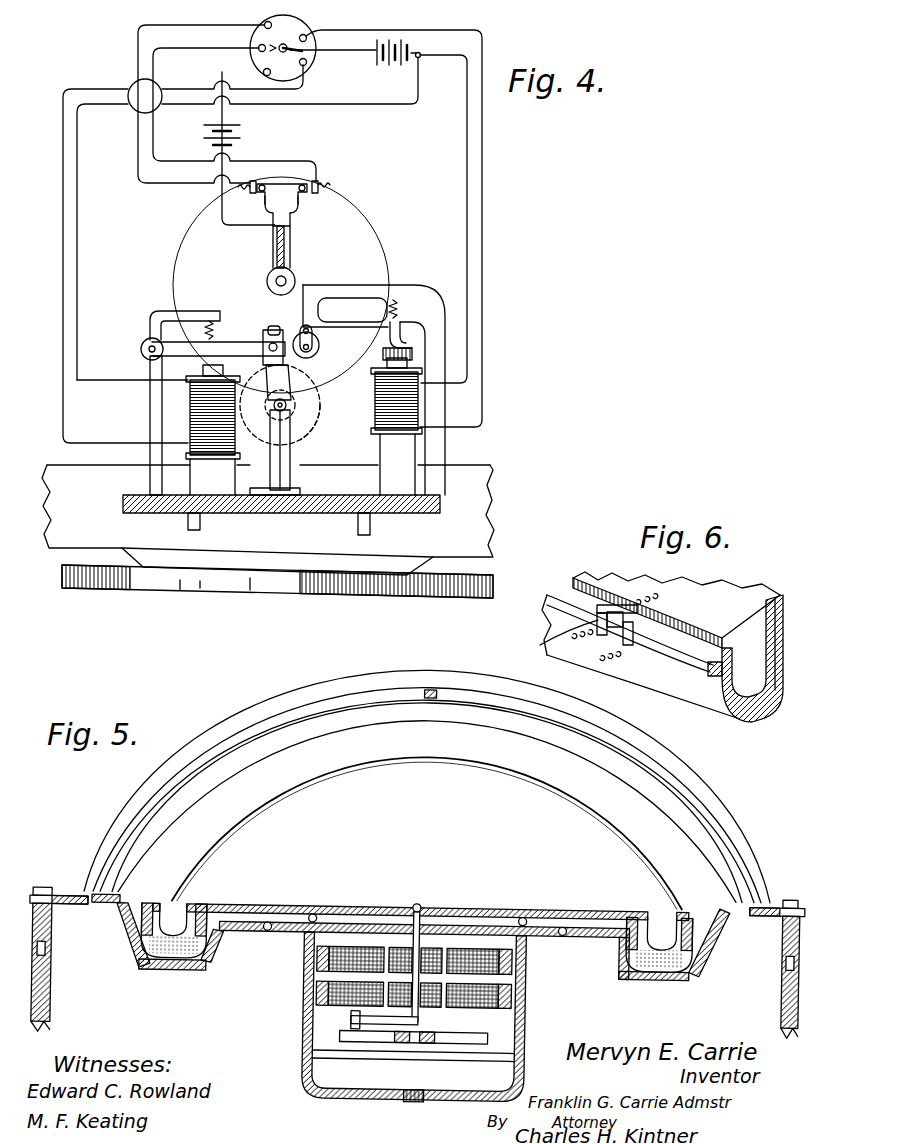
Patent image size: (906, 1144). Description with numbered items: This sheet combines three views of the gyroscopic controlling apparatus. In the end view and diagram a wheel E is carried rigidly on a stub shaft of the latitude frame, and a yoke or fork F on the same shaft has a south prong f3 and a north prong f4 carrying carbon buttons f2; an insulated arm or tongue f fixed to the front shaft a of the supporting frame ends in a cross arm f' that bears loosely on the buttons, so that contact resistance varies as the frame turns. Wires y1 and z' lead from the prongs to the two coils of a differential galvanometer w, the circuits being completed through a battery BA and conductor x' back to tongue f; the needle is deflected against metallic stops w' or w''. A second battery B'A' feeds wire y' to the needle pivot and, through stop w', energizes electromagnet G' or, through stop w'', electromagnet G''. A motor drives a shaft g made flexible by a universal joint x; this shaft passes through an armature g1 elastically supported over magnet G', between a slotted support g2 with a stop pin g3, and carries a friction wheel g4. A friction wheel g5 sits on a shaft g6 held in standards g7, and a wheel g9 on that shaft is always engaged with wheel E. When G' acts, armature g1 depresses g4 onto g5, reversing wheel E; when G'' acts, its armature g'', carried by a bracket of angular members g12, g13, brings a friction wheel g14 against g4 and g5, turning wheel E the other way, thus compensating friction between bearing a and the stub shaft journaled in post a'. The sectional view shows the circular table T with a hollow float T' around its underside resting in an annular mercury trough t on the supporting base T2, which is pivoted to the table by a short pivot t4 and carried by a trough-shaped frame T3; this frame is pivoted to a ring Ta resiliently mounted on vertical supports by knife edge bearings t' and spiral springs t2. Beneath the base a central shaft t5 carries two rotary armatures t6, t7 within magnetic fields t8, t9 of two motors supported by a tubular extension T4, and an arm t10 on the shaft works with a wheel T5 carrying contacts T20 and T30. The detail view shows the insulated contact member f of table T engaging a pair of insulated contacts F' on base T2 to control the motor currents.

In FIG. 4, the differential galvanometer w is at (248, 40).
In FIG. 4, the metallic stop w' is at (196, 235).
In FIG. 4, the metallic stop w'' is at (391, 218).
In FIG. 4, the universal joint x is at (286, 38).
In FIG. 4, the conductor x' is at (236, 148).
In FIG. 4, the wire y' is at (333, 45).
In FIG. 4, the wire y1 is at (234, 115).
In FIG. 4, the wire z' is at (201, 112).
In FIG. 4, the battery BA is at (243, 137).
In FIG. 4, the second battery B'A' is at (272, 211).
In FIG. 4, the wheel E is at (386, 244).
In FIG. 4, the yoke or fork F is at (271, 226).
In FIG. 4, the arm or tongue f is at (293, 247).
In FIG. 6, the arm or tongue f is at (617, 627).
In FIG. 4, the cross arm f' is at (282, 181).
In FIG. 4, the carbon buttons f2 is at (322, 160).
In FIG. 4, the south arm of fork f3 is at (263, 199).
In FIG. 4, the north arm of fork f4 is at (301, 199).
In FIG. 4, the shaft a is at (265, 281).
In FIG. 4, the shaft g is at (218, 358).
In FIG. 4, the armature g1 is at (158, 342).
In FIG. 4, the bifurcated or slotted support g2 is at (285, 396).
In FIG. 4, the stop pin or lug g3 is at (266, 336).
In FIG. 4, the friction wheel g4 is at (281, 323).
In FIG. 4, the friction wheel g5 is at (314, 409).
In FIG. 4, the shaft g6 is at (273, 418).
In FIG. 4, the standard g7 is at (290, 466).
In FIG. 4, the friction wheel g9 is at (284, 411).
In FIG. 4, the angular member g12 is at (368, 276).
In FIG. 4, the angular member g13 is at (400, 316).
In FIG. 4, the friction wheel g14 is at (319, 348).
In FIG. 4, the armature g'' is at (380, 352).
In FIG. 4, the electromagnet G' is at (206, 430).
In FIG. 4, the electromagnet G'' is at (419, 426).
In FIG. 4, the post or support a' is at (297, 408).
In FIG. 6, the table T is at (678, 647).
In FIG. 5, the table T is at (428, 803).
In FIG. 5, the hollow float T' is at (415, 921).
In FIG. 6, the supporting base T2 is at (690, 698).
In FIG. 5, the supporting base T2 is at (600, 926).
In FIG. 5, the frame T3 is at (52, 1000).
In FIG. 5, the tubular extension T4 is at (528, 1013).
In FIG. 5, the wheel T5 is at (472, 1044).
In FIG. 5, the contact T20 is at (353, 1017).
In FIG. 5, the contact T30 is at (342, 1036).
In FIG. 5, the ring or annulus Ta is at (128, 808).
In FIG. 5, the rail t is at (427, 905).
In FIG. 5, the knife edge bearings t' is at (418, 884).
In FIG. 5, the spiral springs t2 is at (52, 927).
In FIG. 5, the short pivot t4 is at (422, 906).
In FIG. 5, the shaft t5 is at (427, 941).
In FIG. 5, the rotary armature t6 is at (410, 970).
In FIG. 5, the rotary armature t7 is at (421, 1021).
In FIG. 5, the magnetic field t8 is at (350, 969).
In FIG. 5, the magnetic field t9 is at (486, 1008).
In FIG. 5, the arm t10 is at (396, 1028).
In FIG. 6, the insulated contacts F' is at (574, 633).